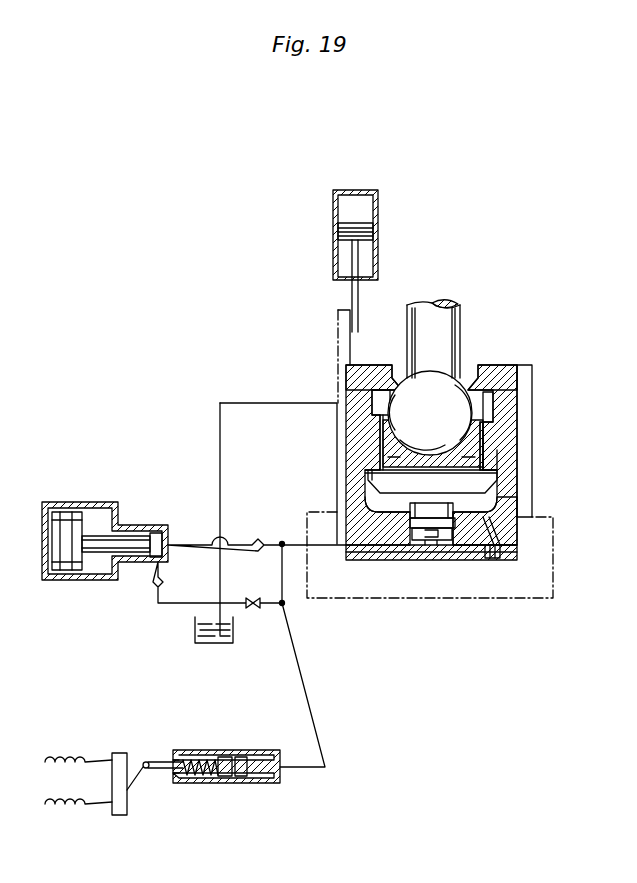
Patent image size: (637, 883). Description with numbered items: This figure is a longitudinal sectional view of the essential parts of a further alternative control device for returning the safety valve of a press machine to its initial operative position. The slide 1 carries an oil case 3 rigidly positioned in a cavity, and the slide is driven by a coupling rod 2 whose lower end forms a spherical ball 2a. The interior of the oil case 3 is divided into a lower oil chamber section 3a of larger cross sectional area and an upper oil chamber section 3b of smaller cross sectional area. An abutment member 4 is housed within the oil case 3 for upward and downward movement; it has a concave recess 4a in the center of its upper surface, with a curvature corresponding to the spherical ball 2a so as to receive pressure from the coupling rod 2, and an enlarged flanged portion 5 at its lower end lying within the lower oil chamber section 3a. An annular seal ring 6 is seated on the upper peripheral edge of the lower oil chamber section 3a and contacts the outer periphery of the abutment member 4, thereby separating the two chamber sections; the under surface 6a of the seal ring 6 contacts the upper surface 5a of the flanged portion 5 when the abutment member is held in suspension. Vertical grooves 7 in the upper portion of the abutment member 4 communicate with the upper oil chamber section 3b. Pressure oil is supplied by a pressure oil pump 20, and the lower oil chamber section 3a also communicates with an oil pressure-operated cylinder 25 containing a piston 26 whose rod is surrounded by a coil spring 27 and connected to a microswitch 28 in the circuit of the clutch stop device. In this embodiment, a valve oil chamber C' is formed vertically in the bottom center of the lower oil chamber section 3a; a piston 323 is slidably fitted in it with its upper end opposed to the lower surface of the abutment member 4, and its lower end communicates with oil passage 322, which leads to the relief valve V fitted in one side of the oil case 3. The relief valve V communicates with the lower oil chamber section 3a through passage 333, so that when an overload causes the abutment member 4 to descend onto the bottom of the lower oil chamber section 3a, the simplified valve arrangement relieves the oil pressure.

The slide 1 is at (340, 600).
The coupling rod 2 is at (442, 317).
The spherical ball 2a is at (442, 385).
The oil case 3 is at (350, 500).
The lower oil chamber section 3a is at (483, 510).
The upper oil chamber section 3b is at (490, 398).
The abutment member 4 is at (372, 408).
The concave recess 4a is at (460, 374).
The flanged portion 5 is at (478, 485).
The upper surface of flanged portion 5a is at (383, 440).
The seal ring 6 is at (493, 462).
The under surface of seal ring 6a is at (372, 478).
The vertical grooves 7 is at (485, 435).
The pressure oil pump 20 is at (106, 502).
The oil pressure-operated cylinder 25 is at (211, 761).
The piston 26 is at (222, 777).
The coil spring 27 is at (200, 776).
The microswitch 28 is at (122, 753).
The oil passage 322 is at (412, 548).
The piston 323 is at (442, 517).
The passage 333 is at (505, 530).
The valve oil chamber C' is at (432, 581).
The relief valve V is at (496, 550).